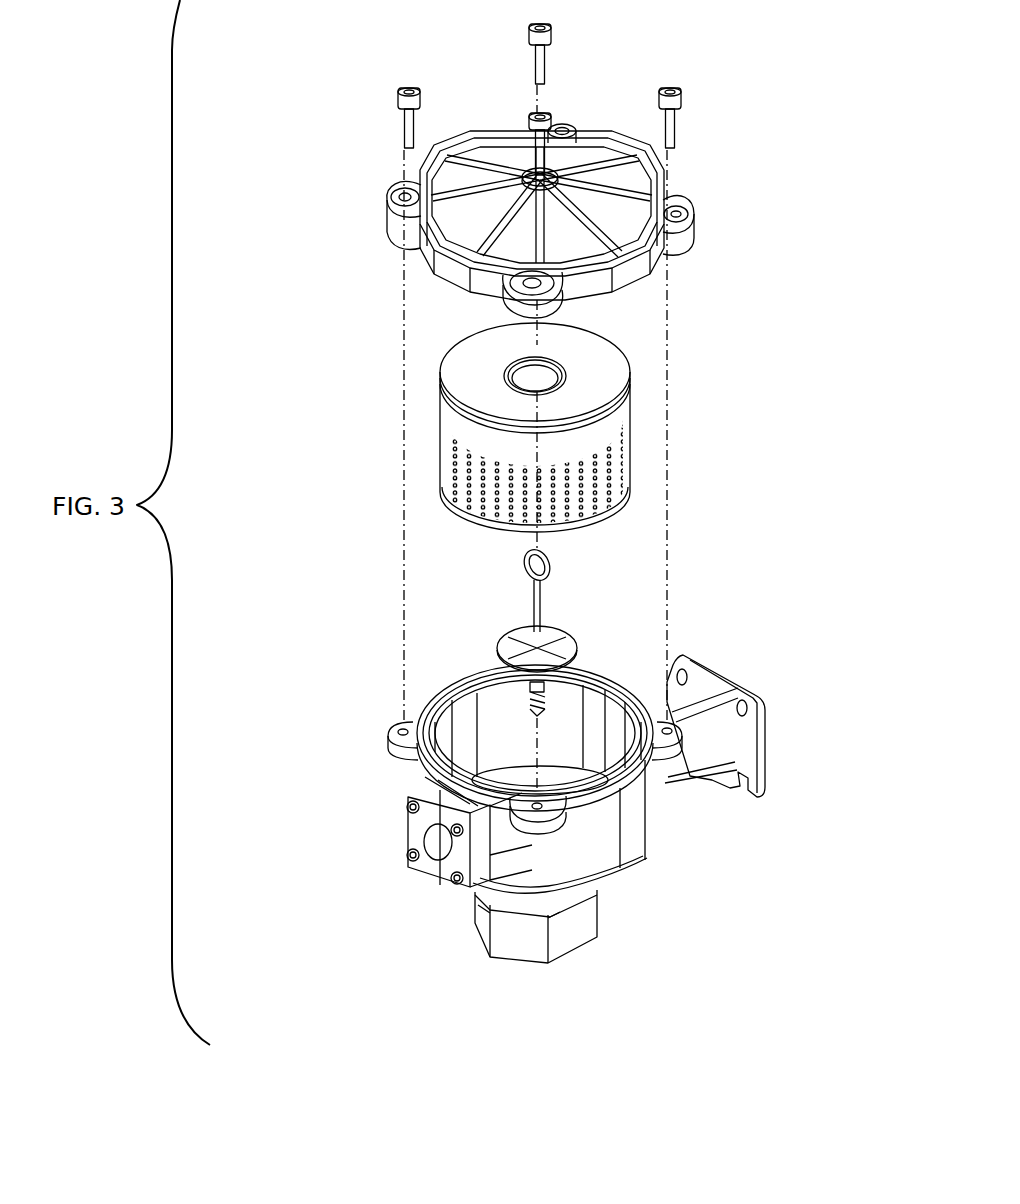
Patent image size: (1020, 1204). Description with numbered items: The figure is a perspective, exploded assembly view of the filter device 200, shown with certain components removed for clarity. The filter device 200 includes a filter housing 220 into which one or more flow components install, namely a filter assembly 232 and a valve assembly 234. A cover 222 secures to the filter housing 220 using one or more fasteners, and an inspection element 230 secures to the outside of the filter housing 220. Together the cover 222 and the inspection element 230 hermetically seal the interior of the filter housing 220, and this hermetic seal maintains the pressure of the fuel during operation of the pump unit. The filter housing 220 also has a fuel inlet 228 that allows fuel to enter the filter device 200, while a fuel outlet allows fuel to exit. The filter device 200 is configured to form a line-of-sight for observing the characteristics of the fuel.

The filter device 200 is at (323, 104).
The cover 222 is at (588, 126).
The filter assembly 232 is at (508, 540).
The valve assembly 234 is at (572, 638).
The inspection element 230 is at (335, 897).
The filter housing 220 is at (610, 862).
The fuel inlet 228 is at (502, 978).